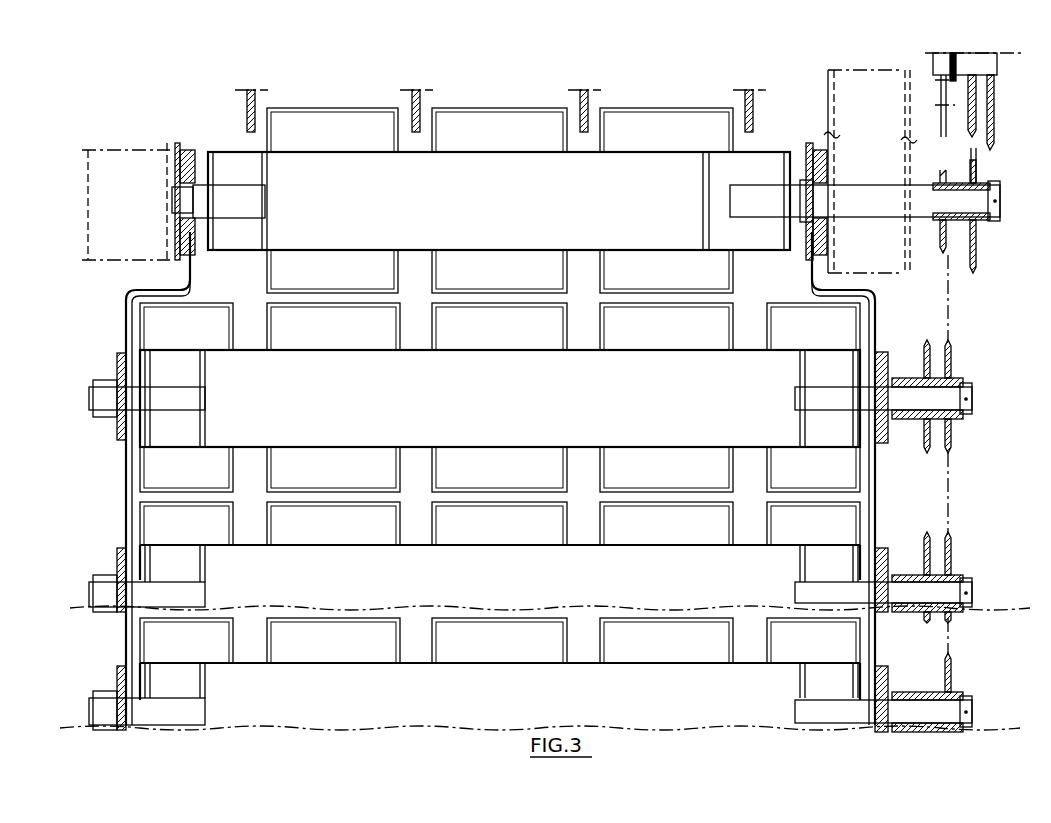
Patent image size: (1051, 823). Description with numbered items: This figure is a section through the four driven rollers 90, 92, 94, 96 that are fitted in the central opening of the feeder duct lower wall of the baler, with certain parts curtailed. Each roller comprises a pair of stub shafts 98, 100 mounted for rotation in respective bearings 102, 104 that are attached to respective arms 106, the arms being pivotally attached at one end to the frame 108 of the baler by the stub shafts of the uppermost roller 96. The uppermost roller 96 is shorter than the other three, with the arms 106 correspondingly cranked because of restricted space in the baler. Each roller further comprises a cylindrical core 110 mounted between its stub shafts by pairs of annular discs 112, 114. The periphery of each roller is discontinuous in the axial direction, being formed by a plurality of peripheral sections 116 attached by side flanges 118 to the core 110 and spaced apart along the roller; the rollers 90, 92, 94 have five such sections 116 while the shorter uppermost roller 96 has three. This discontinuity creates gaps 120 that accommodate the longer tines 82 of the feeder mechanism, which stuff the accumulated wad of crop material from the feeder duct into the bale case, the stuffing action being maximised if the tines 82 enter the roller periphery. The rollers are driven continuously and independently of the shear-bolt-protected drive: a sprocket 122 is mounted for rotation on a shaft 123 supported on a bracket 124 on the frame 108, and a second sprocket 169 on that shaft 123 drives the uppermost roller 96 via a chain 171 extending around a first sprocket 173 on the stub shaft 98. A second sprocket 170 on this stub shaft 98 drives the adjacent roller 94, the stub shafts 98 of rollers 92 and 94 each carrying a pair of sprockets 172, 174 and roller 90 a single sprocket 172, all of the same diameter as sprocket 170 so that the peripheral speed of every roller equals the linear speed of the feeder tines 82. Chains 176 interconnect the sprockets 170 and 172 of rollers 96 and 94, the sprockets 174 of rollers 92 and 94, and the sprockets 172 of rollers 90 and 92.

The tines 82 is at (247, 106).
The driven roller 90 is at (122, 661).
The driven roller 92 is at (122, 542).
The driven roller 94 is at (122, 344).
The uppermost roller 96 is at (196, 136).
The stub shaft 98 is at (705, 206).
The stub shaft 100 is at (256, 204).
The bearing 102 is at (822, 186).
The bearing 104 is at (175, 186).
The arm 106 is at (126, 470).
The frame 108 is at (86, 203).
The cylindrical core 110 is at (524, 153).
The annular disc 112 is at (782, 168).
The annular disc 114 is at (264, 168).
The peripheral section 116 is at (340, 108).
The side flange 118 is at (388, 132).
The gap 120 is at (240, 149).
The sprocket 122 is at (995, 135).
The shaft 123 is at (932, 60).
The bracket 124 is at (947, 120).
The second sprocket 169 is at (977, 100).
The second sprocket 170 is at (940, 253).
The chain 171 is at (979, 164).
The sprocket 172 is at (952, 356).
The first sprocket 173 is at (976, 246).
The sprocket 174 is at (925, 432).
The chain 176 is at (950, 300).